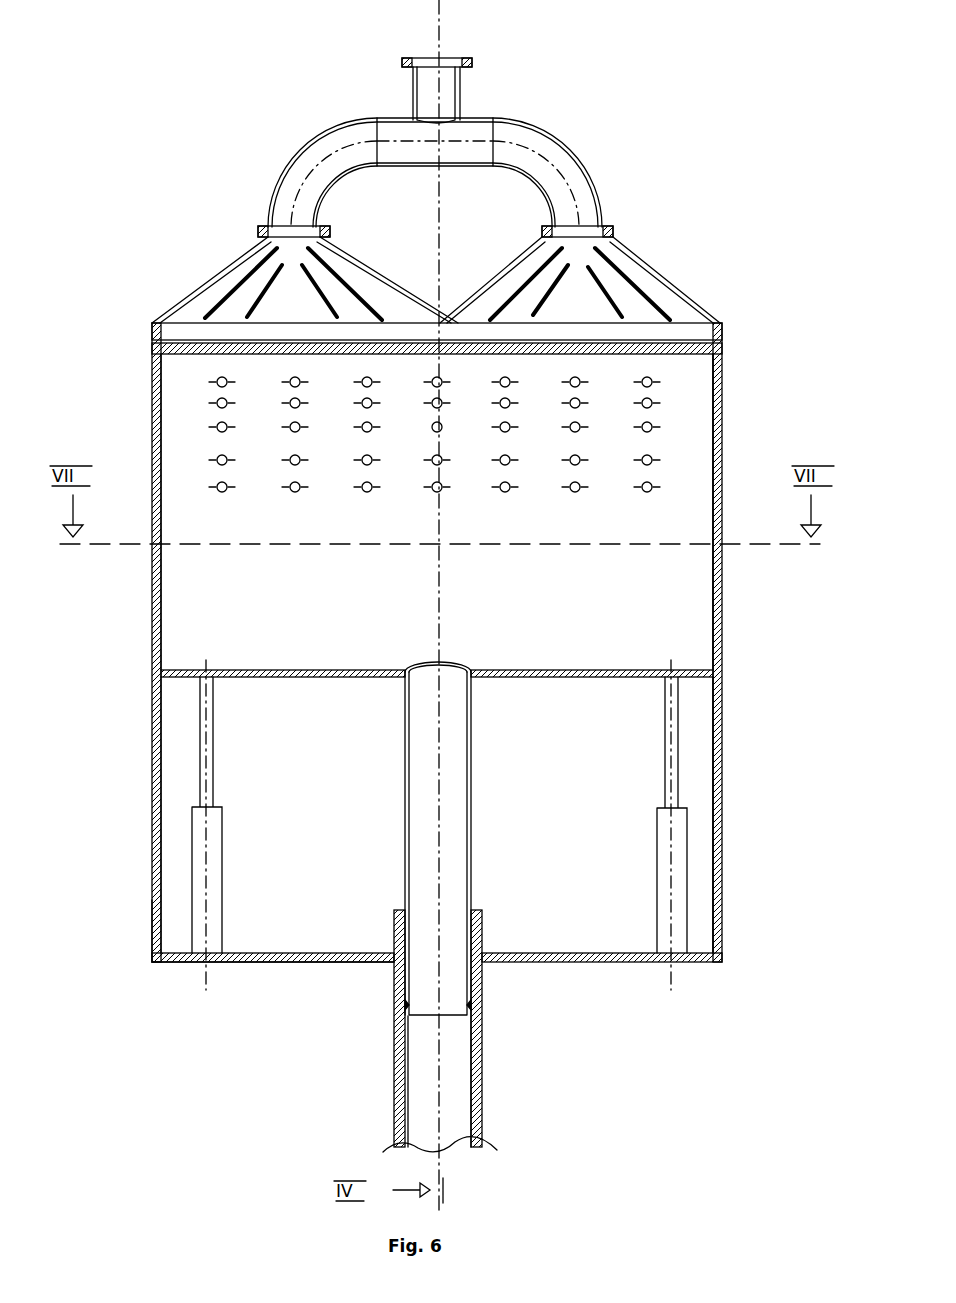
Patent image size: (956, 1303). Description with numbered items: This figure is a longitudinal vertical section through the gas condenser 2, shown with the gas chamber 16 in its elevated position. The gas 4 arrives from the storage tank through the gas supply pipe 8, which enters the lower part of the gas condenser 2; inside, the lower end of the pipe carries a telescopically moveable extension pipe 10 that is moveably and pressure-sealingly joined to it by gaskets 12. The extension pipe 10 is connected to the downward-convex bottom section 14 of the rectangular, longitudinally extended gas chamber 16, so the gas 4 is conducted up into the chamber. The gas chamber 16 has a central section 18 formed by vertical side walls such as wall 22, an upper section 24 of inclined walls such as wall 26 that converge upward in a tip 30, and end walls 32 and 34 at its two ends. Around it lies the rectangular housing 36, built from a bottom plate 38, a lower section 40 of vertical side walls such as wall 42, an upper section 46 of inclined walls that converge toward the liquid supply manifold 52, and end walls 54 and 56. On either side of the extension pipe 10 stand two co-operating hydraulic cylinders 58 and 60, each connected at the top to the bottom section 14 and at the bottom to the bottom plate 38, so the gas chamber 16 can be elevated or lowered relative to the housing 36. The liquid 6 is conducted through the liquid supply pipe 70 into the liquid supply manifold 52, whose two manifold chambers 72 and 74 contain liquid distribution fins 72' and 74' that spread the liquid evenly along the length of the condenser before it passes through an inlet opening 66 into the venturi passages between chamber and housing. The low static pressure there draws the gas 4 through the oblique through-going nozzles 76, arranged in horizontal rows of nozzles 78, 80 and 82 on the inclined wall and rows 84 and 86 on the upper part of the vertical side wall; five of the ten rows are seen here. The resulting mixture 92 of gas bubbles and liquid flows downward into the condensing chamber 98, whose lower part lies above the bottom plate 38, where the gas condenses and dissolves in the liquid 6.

The gas condenser 2 is at (128, 392).
The gas 4 is at (515, 613).
The liquid 6 is at (334, 168).
The gas supply pipe 8 is at (483, 1066).
The extension pipe 10 is at (471, 770).
The gaskets 12 is at (482, 916).
The bottom section 14 is at (265, 668).
The gas chamber 16 is at (640, 580).
The central section 18 is at (172, 527).
The vertical side wall 22 is at (285, 583).
The upper section 24 is at (172, 390).
The inclined wall 26 is at (318, 390).
The tip 30 is at (480, 357).
The end wall 32 is at (163, 600).
The end wall 34 is at (672, 512).
The housing 36 is at (175, 966).
The bottom plate 38 is at (595, 964).
The lower section 40 is at (728, 762).
The vertical side wall 42 is at (300, 905).
The upper section 46 is at (727, 406).
The liquid supply manifold 52 is at (556, 126).
The end wall 54 is at (152, 833).
The end wall 56 is at (725, 832).
The hydraulic cylinder 58 is at (216, 858).
The hydraulic cylinder 60 is at (665, 845).
The inlet opening 66 is at (705, 348).
The liquid supply pipe 70 is at (462, 86).
The manifold chamber 72 is at (287, 279).
The liquid distribution fins 72' is at (279, 263).
The manifold chamber 74 is at (603, 280).
The liquid distribution fins 74' is at (604, 263).
The nozzles 76 is at (380, 486).
The horizontal row of nozzles 78 is at (660, 383).
The horizontal row of nozzles 80 is at (660, 404).
The horizontal row of nozzles 82 is at (660, 428).
The horizontal row of nozzles 84 is at (660, 461).
The horizontal row of nozzles 86 is at (660, 488).
The mixture 92 is at (330, 814).
The condensing chamber 98 is at (615, 773).